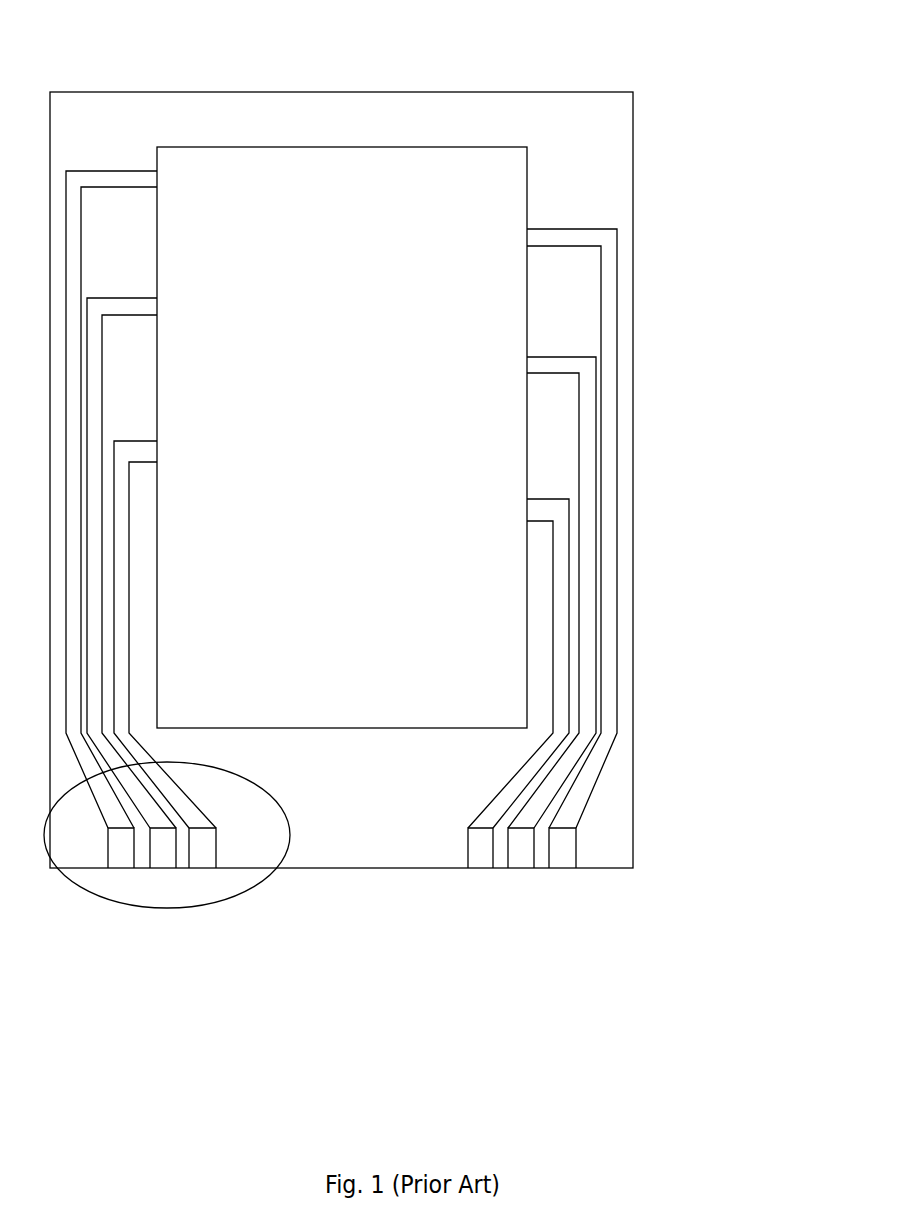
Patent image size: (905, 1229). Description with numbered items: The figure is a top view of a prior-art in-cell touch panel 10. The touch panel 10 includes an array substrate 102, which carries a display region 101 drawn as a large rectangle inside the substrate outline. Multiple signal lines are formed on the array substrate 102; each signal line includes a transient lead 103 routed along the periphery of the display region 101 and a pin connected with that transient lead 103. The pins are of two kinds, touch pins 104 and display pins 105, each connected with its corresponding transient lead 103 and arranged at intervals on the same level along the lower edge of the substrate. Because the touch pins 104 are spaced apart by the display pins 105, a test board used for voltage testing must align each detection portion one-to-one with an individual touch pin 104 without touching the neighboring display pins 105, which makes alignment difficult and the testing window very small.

The in-cell touch panel 10 is at (658, 132).
The display region 101 is at (497, 293).
The array substrate 102 is at (103, 123).
The transient lead 103 is at (601, 681).
The touch pins 104 is at (563, 855).
The display pins 105 is at (117, 857).